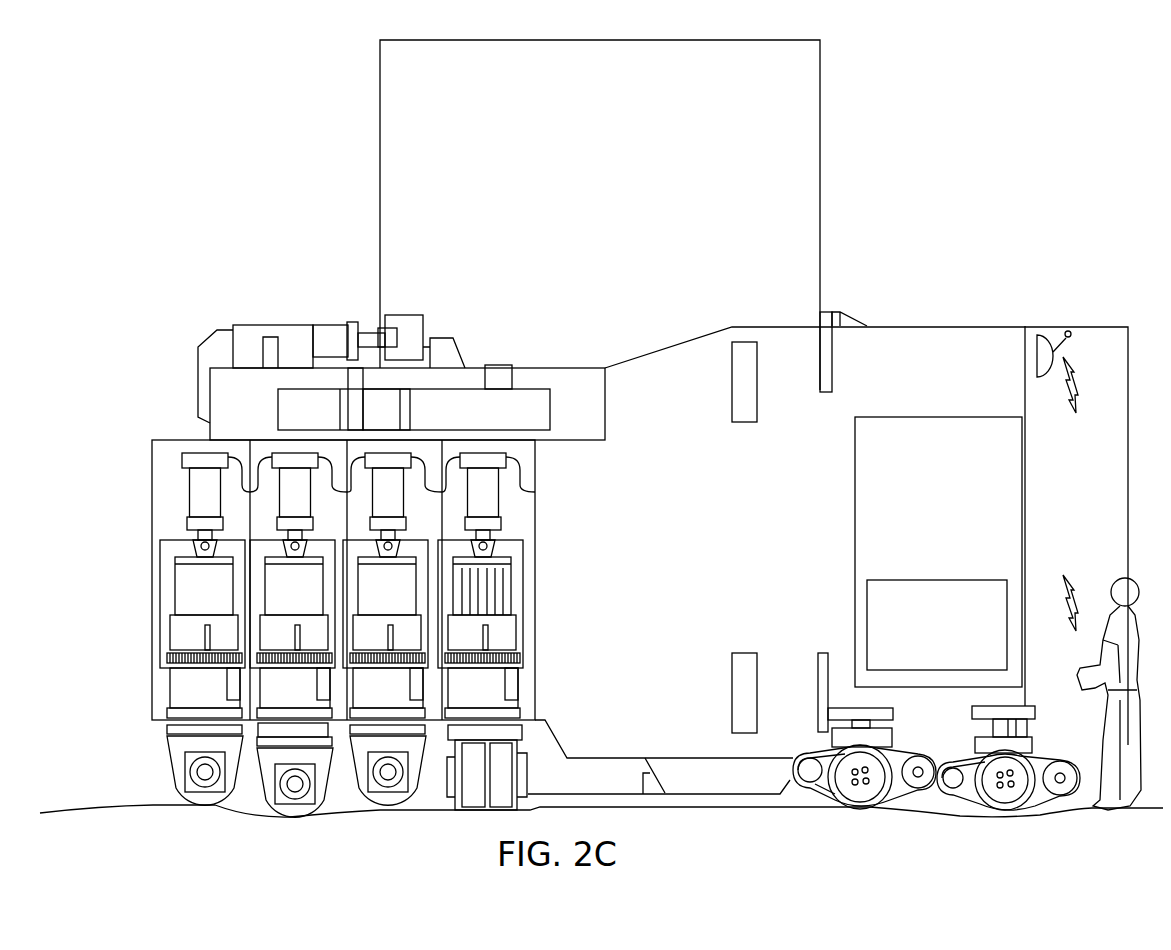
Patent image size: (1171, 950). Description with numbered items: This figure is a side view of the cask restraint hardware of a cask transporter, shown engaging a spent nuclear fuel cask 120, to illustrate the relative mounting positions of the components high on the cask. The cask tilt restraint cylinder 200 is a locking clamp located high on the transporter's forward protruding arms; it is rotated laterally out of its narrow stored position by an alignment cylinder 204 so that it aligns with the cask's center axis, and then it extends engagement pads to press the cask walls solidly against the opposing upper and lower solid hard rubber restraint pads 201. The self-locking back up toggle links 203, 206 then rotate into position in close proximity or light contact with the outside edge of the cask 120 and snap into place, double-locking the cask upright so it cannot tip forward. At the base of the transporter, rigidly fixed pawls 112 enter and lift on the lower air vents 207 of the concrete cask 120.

The pawl 112 is at (755, 778).
The spent nuclear fuel cask 120 is at (380, 153).
The cask tilt restraint cylinder 200 is at (332, 333).
The hard rubber restraint pad 201 is at (340, 327).
The back up toggle arm 203 is at (345, 408).
The alignment cylinder 204 is at (353, 325).
The back up toggle link 206 is at (383, 407).
The lower air vent 207 is at (653, 783).